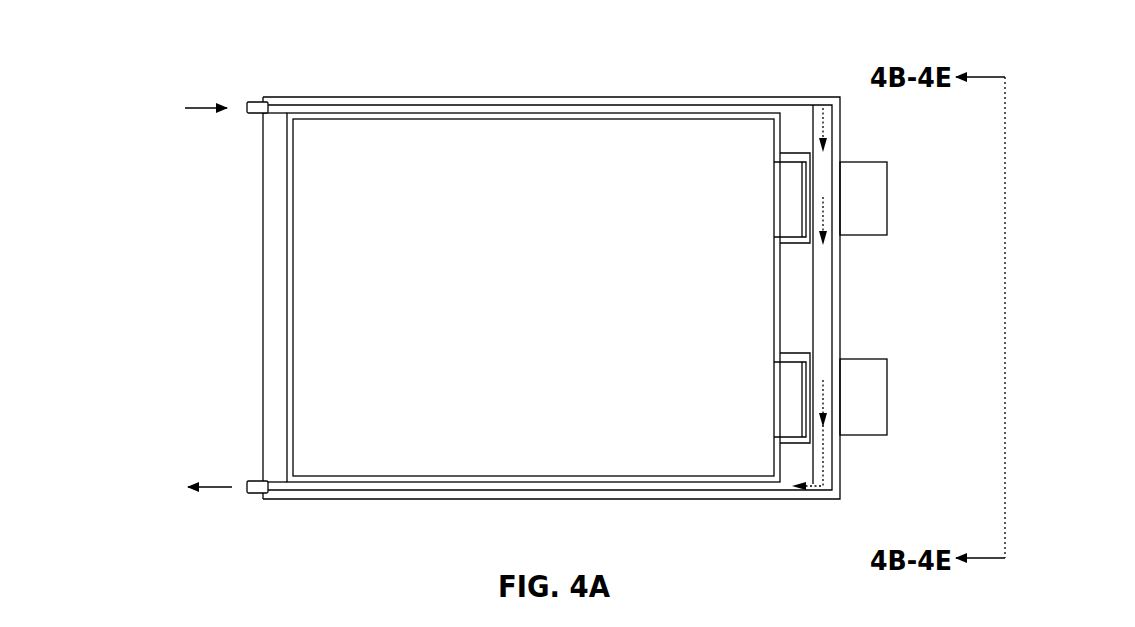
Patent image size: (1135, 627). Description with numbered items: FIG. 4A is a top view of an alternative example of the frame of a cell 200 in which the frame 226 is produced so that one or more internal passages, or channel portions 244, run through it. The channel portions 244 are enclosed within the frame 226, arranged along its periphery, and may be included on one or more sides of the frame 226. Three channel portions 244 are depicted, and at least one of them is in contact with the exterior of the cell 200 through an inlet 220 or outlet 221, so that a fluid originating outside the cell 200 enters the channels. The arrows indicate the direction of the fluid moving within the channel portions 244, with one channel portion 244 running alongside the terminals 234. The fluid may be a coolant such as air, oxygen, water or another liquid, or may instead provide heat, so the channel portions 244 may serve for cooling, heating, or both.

The cell 200 is at (199, 42).
The inlet 220 is at (251, 101).
The outlet 221 is at (256, 494).
The frame 226 is at (273, 352).
The terminals 234 is at (873, 195).
The channel portions 244 is at (708, 105).